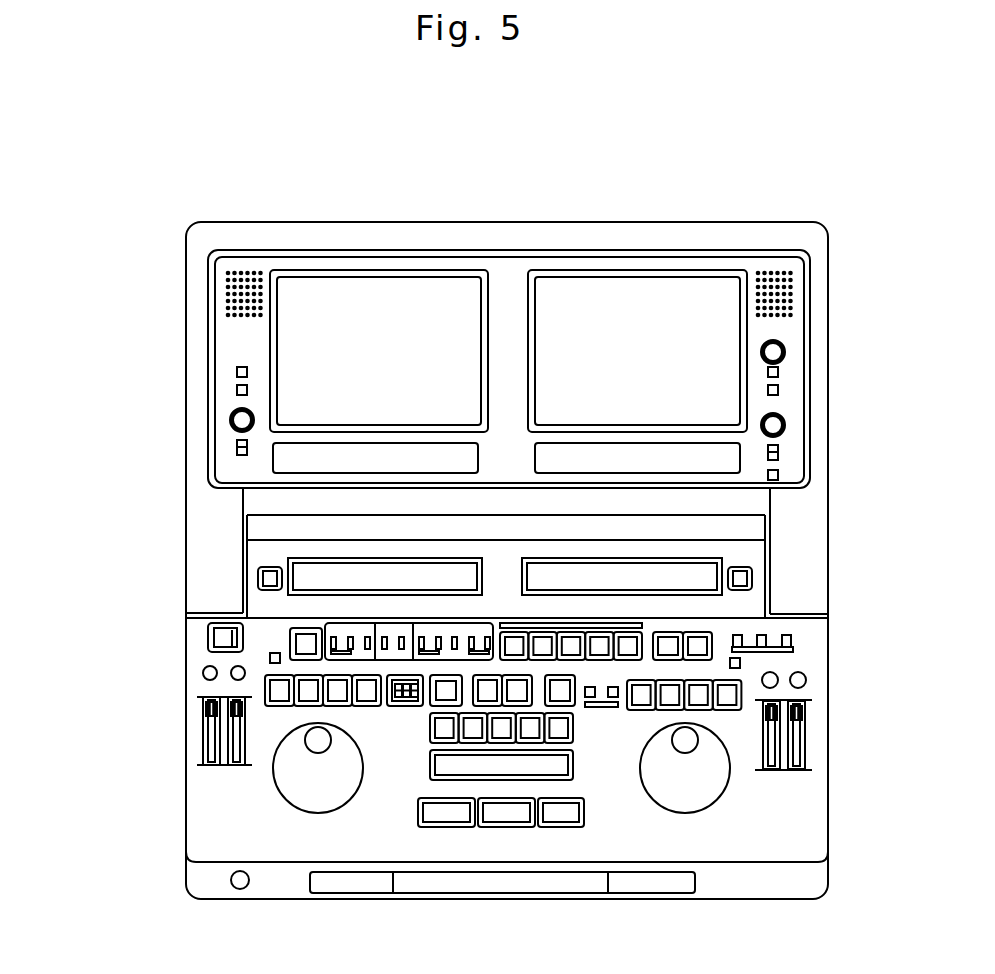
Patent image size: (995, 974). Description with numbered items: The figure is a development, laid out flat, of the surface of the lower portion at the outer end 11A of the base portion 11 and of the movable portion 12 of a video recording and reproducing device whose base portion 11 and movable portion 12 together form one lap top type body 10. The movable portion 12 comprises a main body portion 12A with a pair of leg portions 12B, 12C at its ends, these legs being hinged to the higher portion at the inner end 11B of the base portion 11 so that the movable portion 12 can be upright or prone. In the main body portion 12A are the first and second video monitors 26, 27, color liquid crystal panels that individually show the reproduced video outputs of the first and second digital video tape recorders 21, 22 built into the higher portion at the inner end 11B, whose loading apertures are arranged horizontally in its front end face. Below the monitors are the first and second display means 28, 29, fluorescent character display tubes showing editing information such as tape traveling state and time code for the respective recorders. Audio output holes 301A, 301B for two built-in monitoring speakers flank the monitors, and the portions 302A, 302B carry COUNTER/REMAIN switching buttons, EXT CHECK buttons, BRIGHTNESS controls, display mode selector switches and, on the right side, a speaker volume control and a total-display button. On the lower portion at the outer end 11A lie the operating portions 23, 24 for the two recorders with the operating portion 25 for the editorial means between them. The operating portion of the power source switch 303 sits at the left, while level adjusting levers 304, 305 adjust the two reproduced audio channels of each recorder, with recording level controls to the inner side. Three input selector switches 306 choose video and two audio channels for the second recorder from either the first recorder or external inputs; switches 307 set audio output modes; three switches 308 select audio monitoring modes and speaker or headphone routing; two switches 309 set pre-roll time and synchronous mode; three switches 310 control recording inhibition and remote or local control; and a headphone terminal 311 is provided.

The lap top type body 10 is at (76, 488).
The base portion 11 is at (188, 745).
The lower portion at the outer end 11A is at (690, 842).
The higher portion at the inner end 11B is at (735, 608).
The movable portion 12 is at (188, 350).
The main body portion 12A is at (827, 338).
The leg portion 12B is at (202, 602).
The leg portion 12C is at (825, 590).
The first digital video tape recorder 21 is at (308, 580).
The second digital video tape recorder 22 is at (692, 580).
The operating portion 23 is at (250, 808).
The operating portion 24 is at (770, 838).
The operating portion for editorial means 25 is at (498, 840).
The first video monitor 26 is at (345, 290).
The second video monitor 27 is at (640, 290).
The first display means 28 is at (280, 458).
The second display means 29 is at (718, 470).
The audio output holes 301A is at (228, 292).
The audio output holes 301B is at (790, 296).
The COUNTER/REMAIN switching button portion 302A is at (229, 422).
The volume control portion 302B is at (786, 413).
The operating portion of the power source switch 303 is at (208, 642).
The level adjusting levers 304 is at (220, 774).
The level adjusting levers 305 is at (795, 779).
The input selector switch operating portions 306 is at (799, 638).
The mode selector switch operating portion 307 is at (480, 611).
The mode selector switch operating portions for audio monitoring 308 is at (437, 611).
The selector switch operating portions for editorial operation 309 is at (394, 611).
The selector switch operating portions 310 is at (336, 611).
The headphone terminal 311 is at (232, 887).